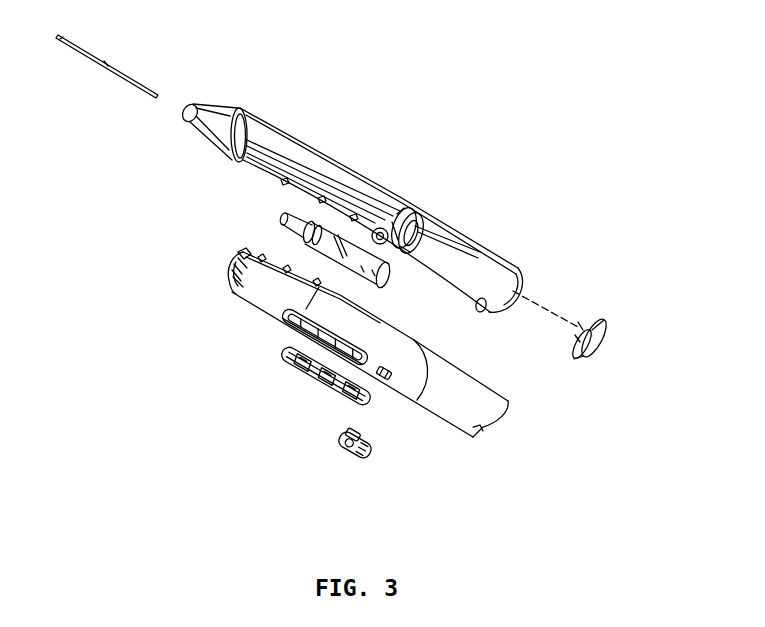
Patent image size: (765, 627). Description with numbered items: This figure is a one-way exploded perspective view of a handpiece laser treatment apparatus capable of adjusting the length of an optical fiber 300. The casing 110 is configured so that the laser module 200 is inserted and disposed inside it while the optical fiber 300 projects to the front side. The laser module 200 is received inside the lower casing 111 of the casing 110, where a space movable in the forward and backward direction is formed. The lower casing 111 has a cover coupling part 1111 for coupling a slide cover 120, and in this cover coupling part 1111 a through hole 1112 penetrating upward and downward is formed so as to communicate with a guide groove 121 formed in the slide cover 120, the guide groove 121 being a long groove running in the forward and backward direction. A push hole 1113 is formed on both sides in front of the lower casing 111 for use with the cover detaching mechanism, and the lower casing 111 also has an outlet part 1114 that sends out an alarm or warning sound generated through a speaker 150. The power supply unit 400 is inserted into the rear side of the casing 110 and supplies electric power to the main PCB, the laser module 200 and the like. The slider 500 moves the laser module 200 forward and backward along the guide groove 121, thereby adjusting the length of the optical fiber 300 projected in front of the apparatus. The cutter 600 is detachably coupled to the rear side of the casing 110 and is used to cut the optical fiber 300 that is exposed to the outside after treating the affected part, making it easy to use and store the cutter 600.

The optical fiber 300 is at (110, 60).
The power supply unit 400 is at (466, 260).
The speaker 150 is at (400, 250).
The laser module 200 is at (280, 217).
The casing 110 is at (523, 318).
The lower casing 111 is at (444, 425).
The push hole 1113 is at (240, 253).
The cover coupling part 1111 is at (291, 322).
The through hole 1112 is at (308, 336).
The slide cover 120 is at (285, 367).
The guide groove 121 is at (322, 387).
The outlet part 1114 is at (381, 380).
The slider 500 is at (348, 464).
The cutter 600 is at (612, 313).